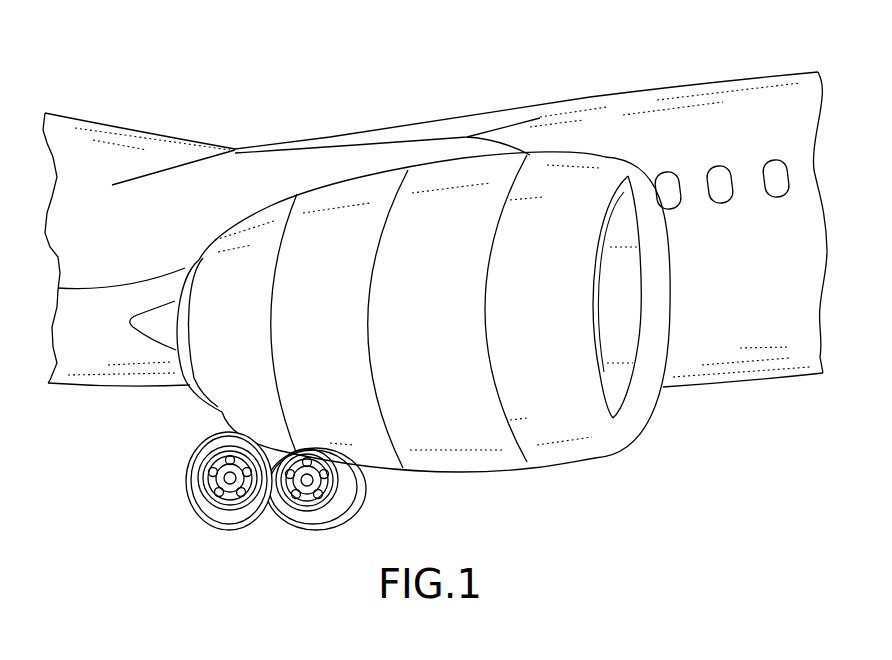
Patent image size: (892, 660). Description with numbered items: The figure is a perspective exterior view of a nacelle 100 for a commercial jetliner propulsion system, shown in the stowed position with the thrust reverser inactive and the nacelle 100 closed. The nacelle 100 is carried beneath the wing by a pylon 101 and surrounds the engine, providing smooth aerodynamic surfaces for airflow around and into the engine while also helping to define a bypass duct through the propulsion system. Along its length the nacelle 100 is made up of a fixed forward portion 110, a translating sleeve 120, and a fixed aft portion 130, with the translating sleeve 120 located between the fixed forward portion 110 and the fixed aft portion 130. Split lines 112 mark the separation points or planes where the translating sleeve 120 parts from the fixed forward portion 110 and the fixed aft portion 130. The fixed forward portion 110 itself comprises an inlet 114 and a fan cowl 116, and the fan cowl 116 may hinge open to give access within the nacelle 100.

The nacelle 100 is at (632, 524).
The pylon 101 is at (234, 152).
The fixed forward portion 110 is at (540, 123).
The split lines 112 is at (275, 394).
The inlet 114 is at (580, 154).
The fan cowl 116 is at (457, 158).
The translating sleeve 120 is at (357, 178).
The fixed aft portion 130 is at (268, 204).